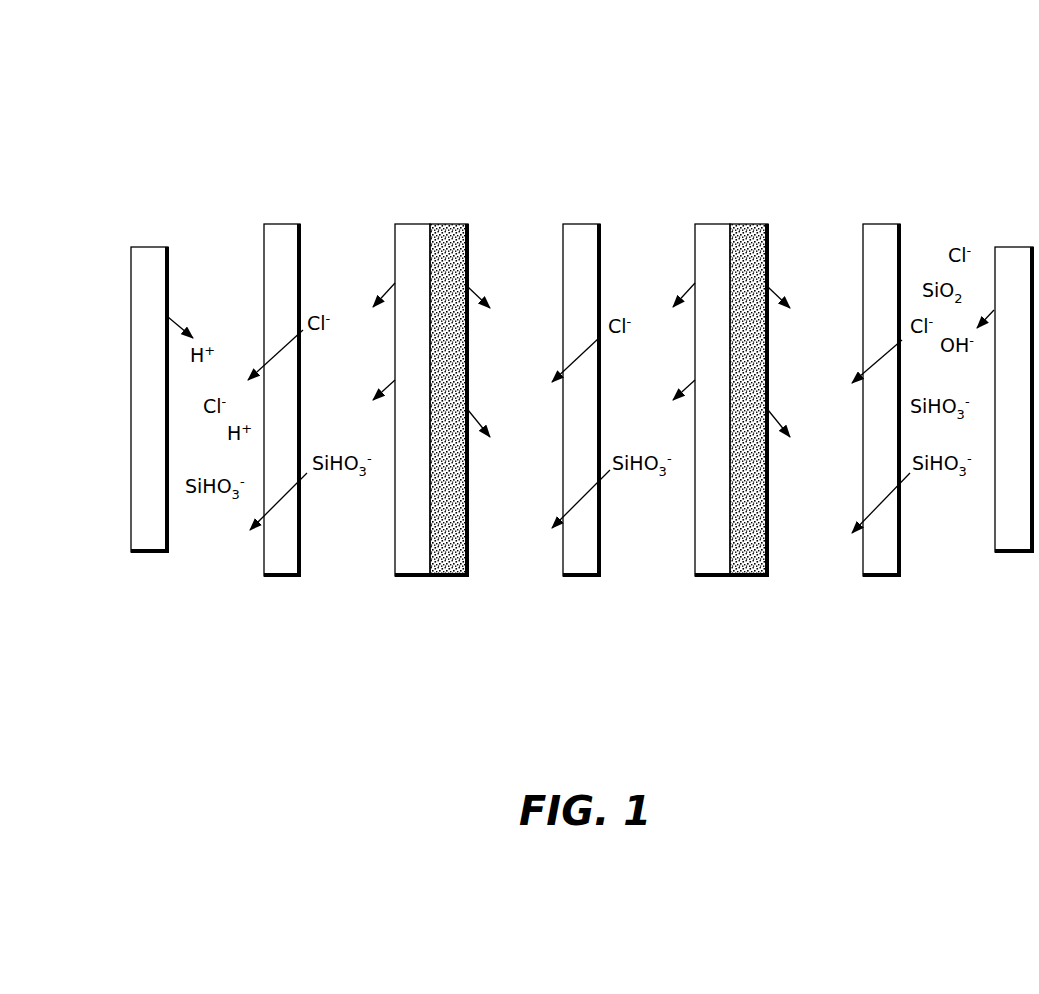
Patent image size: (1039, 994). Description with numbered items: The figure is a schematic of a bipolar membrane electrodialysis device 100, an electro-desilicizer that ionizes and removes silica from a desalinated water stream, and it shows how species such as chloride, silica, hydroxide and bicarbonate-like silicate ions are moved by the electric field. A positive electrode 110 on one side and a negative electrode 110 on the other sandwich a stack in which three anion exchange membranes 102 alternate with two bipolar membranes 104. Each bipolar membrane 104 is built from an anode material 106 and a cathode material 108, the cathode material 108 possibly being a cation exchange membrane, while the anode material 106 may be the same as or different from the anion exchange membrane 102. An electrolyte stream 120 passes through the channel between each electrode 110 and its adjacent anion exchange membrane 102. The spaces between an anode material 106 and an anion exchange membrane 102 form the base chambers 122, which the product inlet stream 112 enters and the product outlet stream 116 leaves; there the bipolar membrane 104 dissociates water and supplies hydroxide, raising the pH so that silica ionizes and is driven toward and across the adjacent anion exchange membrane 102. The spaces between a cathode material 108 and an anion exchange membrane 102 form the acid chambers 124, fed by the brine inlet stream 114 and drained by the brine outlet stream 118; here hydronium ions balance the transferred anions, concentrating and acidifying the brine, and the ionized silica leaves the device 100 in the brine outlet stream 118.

The bipolar membrane electrodialysis device 100 is at (126, 140).
The anion exchange membrane 102 is at (283, 223).
The bipolar membrane 104 is at (567, 427).
The anode material 106 is at (413, 577).
The cathode material 108 is at (448, 577).
The electrode 110 is at (150, 246).
The product inlet stream 112 is at (348, 170).
The brine inlet stream 114 is at (517, 170).
The product outlet stream 116 is at (348, 632).
The brine outlet stream 118 is at (517, 632).
The electrolyte stream 120 is at (220, 173).
The base chamber 122 is at (300, 586).
The acid chamber 124 is at (466, 586).